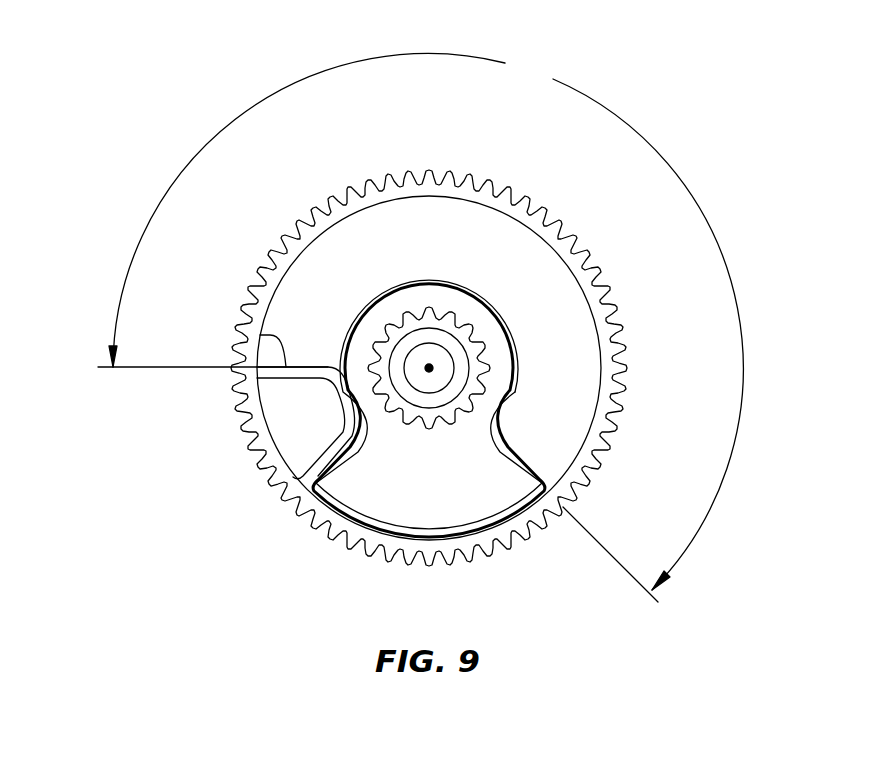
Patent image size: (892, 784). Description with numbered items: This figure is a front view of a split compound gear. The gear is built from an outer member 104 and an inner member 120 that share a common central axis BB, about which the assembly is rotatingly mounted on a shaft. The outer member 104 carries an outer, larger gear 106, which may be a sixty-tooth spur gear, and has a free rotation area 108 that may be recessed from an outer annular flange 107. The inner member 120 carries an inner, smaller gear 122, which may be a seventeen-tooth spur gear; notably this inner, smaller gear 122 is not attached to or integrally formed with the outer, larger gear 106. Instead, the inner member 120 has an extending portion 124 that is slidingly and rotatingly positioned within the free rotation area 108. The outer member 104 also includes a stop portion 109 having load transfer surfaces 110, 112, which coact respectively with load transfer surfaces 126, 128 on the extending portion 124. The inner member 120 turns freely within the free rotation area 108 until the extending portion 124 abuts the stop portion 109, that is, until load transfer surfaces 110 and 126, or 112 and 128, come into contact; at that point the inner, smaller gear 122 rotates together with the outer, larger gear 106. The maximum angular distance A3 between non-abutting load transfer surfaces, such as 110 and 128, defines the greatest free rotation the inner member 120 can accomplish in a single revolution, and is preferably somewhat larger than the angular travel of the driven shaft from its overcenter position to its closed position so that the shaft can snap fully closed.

The outer member 104 is at (546, 196).
The outer, larger gear 106 is at (602, 265).
The outer annular flange 107 is at (403, 177).
The free rotation area 108 is at (570, 362).
The stop portion 109 is at (306, 355).
The load transfer surface 110 is at (258, 334).
The load transfer surface 112 is at (317, 515).
The inner member 120 is at (432, 280).
The inner, smaller gear 122 is at (423, 425).
The extending portion 124 is at (365, 495).
The load transfer surface 126 is at (523, 457).
The load transfer surface 128 is at (332, 447).
The maximum angular distance A3 is at (420, 327).
The central axis BB is at (429, 368).